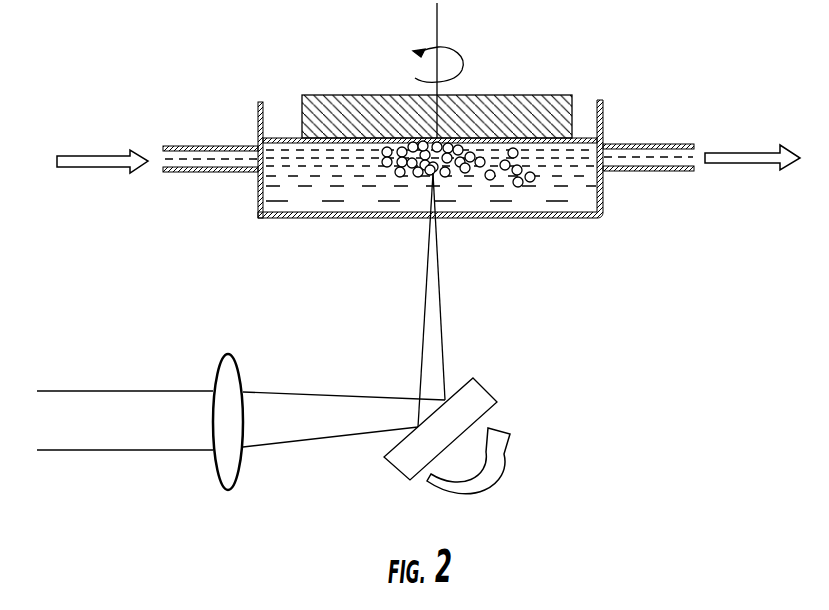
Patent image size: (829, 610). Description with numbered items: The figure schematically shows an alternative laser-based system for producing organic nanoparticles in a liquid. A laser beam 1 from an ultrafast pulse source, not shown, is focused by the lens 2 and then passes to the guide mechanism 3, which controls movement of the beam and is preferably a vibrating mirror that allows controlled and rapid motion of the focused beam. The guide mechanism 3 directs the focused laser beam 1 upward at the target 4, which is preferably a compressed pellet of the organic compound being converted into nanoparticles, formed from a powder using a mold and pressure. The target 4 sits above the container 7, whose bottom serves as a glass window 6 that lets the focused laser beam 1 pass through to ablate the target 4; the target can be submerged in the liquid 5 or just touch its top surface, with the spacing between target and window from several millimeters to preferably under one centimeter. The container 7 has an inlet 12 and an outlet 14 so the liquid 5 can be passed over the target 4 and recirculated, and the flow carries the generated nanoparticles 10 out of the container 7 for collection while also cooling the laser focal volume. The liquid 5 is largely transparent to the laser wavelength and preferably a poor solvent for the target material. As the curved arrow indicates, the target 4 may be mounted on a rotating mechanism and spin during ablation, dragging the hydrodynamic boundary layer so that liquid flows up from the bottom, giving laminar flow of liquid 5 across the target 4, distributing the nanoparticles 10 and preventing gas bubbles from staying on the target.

The laser beam 1 is at (142, 452).
The lens 2 is at (228, 490).
The guide mechanism 3 is at (487, 394).
The target 4 is at (488, 95).
The liquid 5 is at (555, 195).
The glass window 6 is at (372, 218).
The container 7 is at (258, 127).
The nanoparticles 10 is at (463, 173).
The inlet 12 is at (217, 174).
The outlet 14 is at (620, 172).